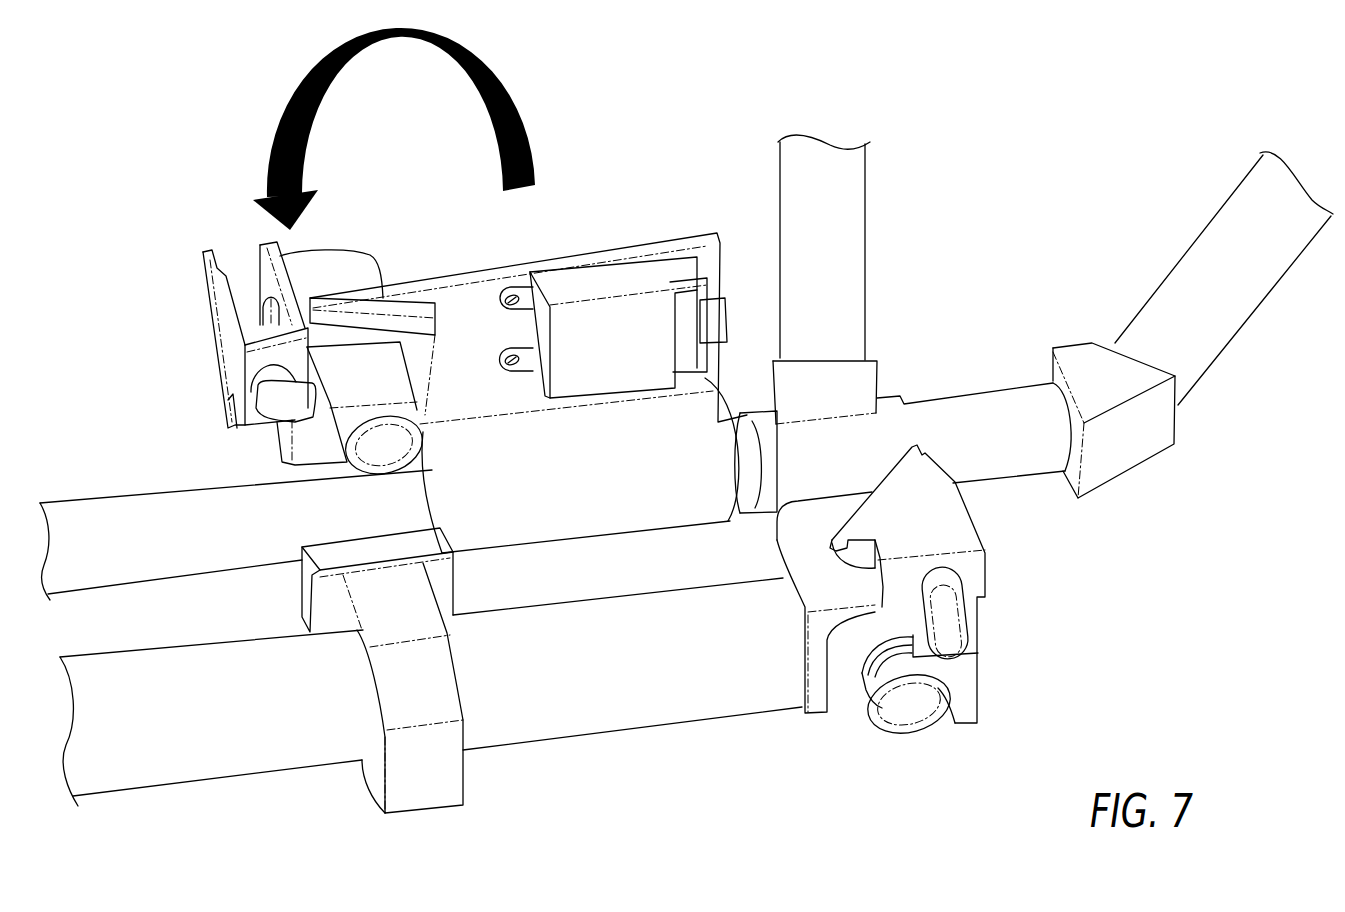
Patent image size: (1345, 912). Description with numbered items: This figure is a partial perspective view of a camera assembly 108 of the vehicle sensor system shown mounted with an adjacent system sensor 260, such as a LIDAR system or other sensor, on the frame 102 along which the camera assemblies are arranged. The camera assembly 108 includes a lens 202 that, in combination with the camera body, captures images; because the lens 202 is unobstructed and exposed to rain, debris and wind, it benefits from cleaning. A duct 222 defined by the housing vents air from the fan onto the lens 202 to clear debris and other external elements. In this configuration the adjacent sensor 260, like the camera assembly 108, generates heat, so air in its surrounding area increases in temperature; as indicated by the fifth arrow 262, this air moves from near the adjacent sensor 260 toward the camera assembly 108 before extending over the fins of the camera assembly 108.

The frame 102 is at (1217, 228).
The camera assembly 108 is at (152, 286).
The lens 202 is at (375, 452).
The duct 222 is at (277, 396).
The adjacent system sensor 260 is at (607, 342).
The fifth arrow 262 is at (265, 145).